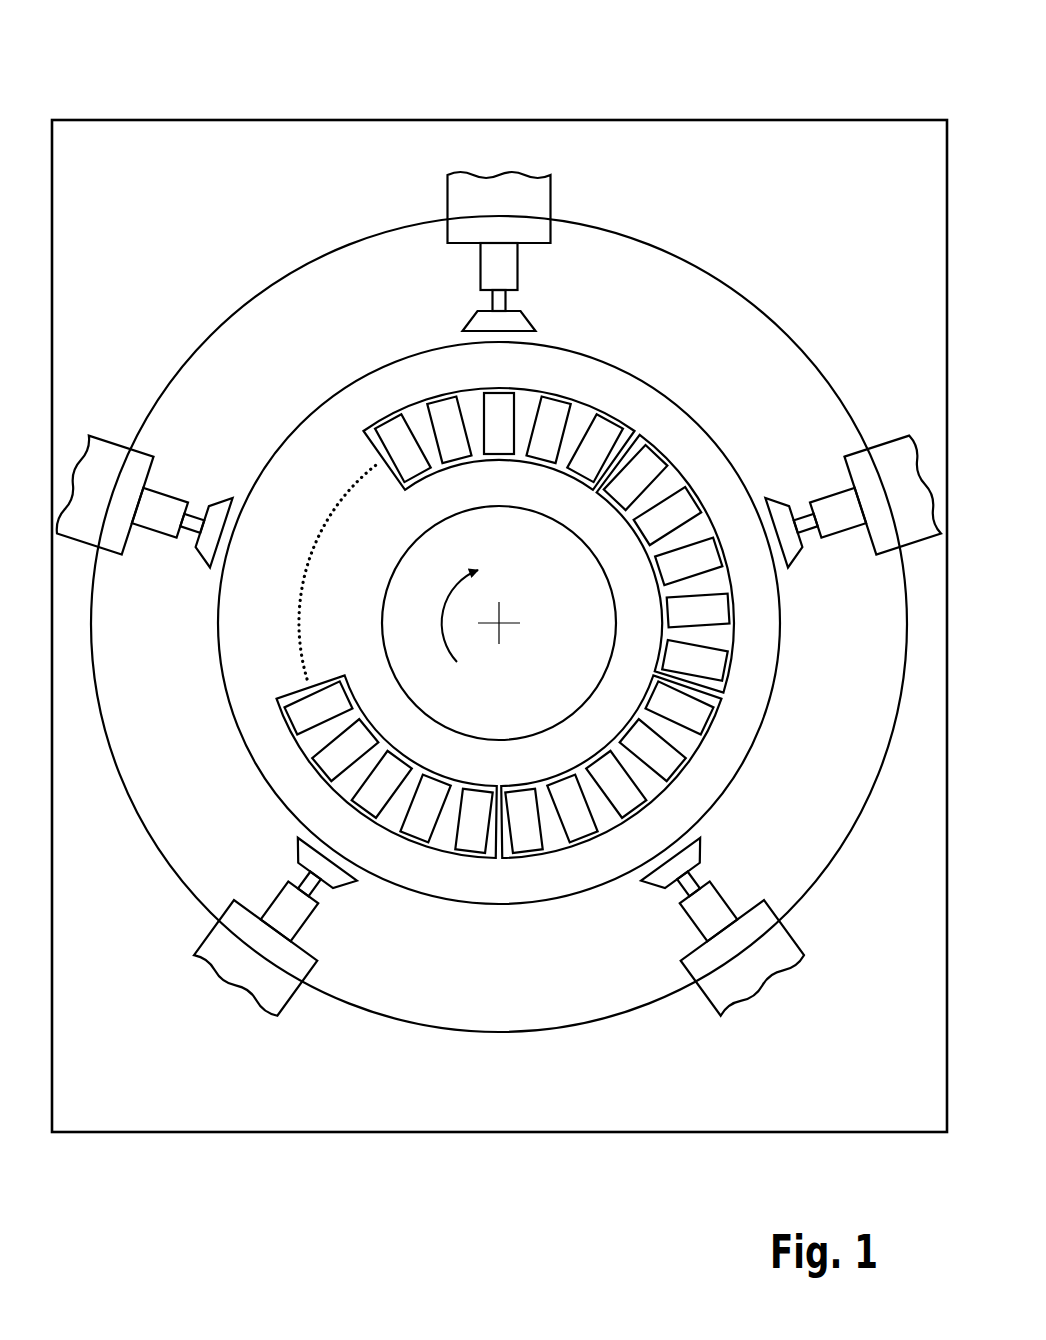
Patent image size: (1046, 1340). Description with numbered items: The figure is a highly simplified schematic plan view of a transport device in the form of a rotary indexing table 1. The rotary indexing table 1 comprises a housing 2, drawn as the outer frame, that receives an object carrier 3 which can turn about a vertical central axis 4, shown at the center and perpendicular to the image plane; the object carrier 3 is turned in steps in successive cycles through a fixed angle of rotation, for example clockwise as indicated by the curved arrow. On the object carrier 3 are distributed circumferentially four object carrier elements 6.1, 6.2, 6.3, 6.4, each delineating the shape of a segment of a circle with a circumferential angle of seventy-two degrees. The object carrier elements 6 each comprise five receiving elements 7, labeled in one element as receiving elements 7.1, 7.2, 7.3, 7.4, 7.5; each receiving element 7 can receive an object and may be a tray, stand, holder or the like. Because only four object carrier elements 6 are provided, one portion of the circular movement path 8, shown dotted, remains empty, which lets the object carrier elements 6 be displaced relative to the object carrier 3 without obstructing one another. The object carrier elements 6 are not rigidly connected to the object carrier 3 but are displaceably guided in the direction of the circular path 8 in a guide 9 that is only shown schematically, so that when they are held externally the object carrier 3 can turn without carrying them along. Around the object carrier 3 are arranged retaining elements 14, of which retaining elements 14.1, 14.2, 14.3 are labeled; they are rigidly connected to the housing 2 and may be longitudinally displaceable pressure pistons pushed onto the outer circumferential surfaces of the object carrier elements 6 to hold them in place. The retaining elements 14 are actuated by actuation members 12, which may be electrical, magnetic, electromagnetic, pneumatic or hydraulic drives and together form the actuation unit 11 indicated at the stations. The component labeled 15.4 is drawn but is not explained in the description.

The rotary indexing table 1 is at (711, 75).
The housing 2 is at (300, 120).
The object carrier 3 is at (753, 348).
The vertical central axis 4 is at (503, 620).
The object carrier elements 6 is at (402, 386).
The object carrier element 6.1 is at (442, 850).
The object carrier element 6.2 is at (697, 745).
The object carrier element 6.3 is at (710, 520).
The object carrier element 6.4 is at (519, 419).
The receiving elements 7 is at (479, 427).
The receiving element 7.1 is at (602, 433).
The receiving element 7.2 is at (540, 443).
The receiving element 7.3 is at (495, 407).
The receiving element 7.4 is at (446, 420).
The receiving element 7.5 is at (400, 450).
The circular movement path 8 is at (308, 553).
The guide 9 is at (386, 605).
The actuation unit 11 is at (499, 589).
The actuation members 12 is at (568, 595).
The retaining elements 14 is at (261, 815).
The retaining element 14.1 is at (461, 314).
The retaining element 14.2 is at (661, 891).
The retaining element 14.3 is at (802, 557).
The removal station 15.4 is at (108, 467).